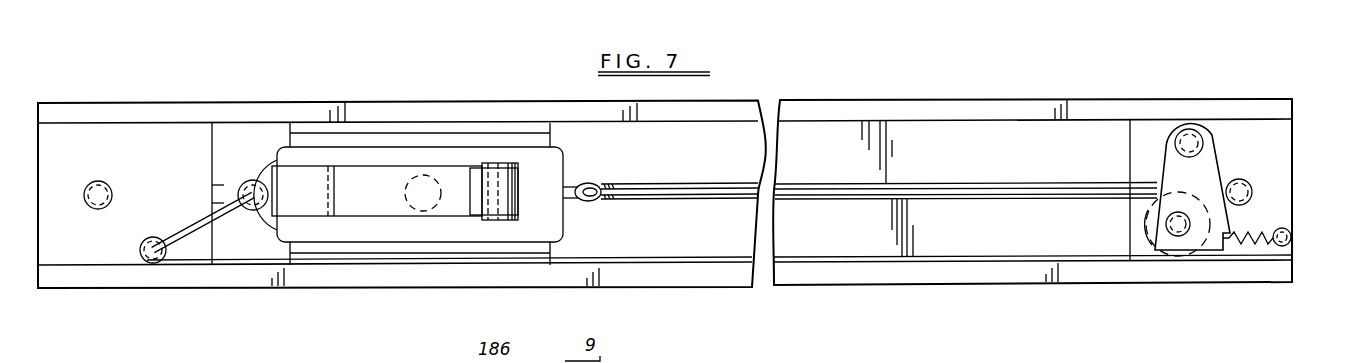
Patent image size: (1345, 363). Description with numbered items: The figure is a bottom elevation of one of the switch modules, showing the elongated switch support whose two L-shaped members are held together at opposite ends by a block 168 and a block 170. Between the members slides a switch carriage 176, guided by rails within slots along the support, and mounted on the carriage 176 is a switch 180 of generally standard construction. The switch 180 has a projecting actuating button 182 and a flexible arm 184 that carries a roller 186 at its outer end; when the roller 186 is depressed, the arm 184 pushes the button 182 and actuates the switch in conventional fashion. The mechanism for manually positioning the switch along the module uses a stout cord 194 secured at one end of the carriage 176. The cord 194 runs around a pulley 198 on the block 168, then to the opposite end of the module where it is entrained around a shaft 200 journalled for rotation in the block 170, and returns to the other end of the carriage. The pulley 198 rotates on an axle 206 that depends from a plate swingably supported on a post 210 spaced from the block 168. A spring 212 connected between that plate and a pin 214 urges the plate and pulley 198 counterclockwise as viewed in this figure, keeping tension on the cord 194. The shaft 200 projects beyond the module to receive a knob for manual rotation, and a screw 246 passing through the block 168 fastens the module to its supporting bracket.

The block 168 is at (1245, 140).
The block 170 is at (73, 133).
The switch carriage 176 is at (543, 247).
The switch 180 is at (377, 203).
The actuating button 182 is at (405, 155).
The flexible arm 184 is at (378, 205).
The roller 186 is at (518, 190).
The cord 194 is at (185, 227).
The pulley 198 is at (1173, 257).
The shaft 200 is at (141, 250).
The axle 206 is at (1168, 226).
The post 210 is at (1191, 136).
The spring 212 is at (1247, 243).
The pin 214 is at (1280, 247).
The screw 246 is at (1243, 186).